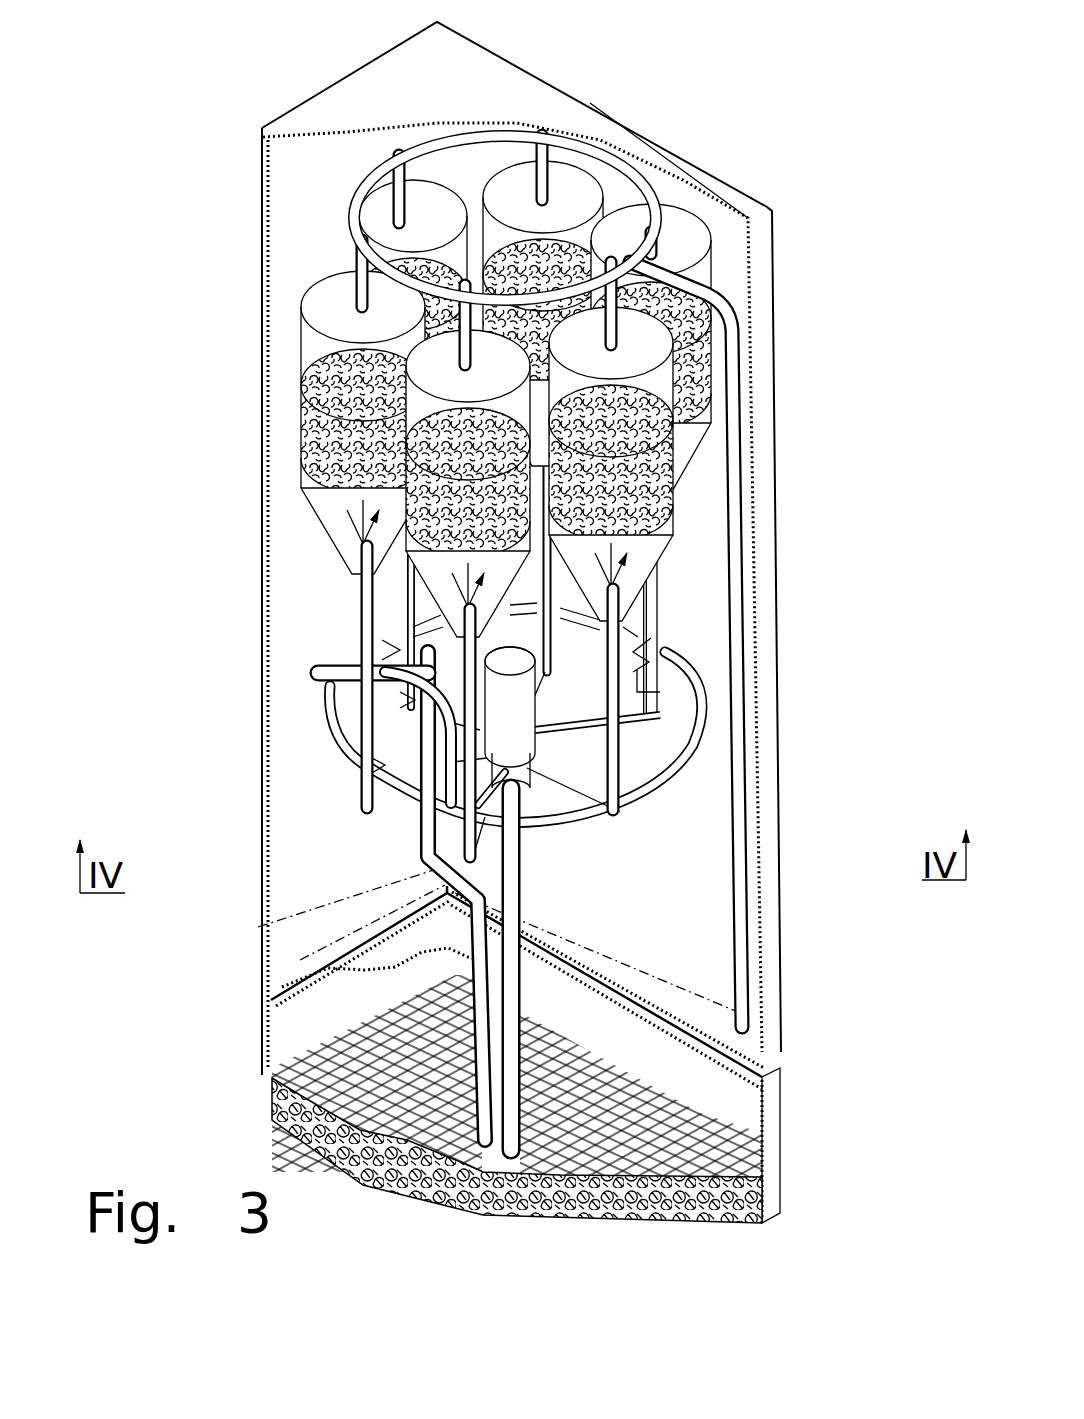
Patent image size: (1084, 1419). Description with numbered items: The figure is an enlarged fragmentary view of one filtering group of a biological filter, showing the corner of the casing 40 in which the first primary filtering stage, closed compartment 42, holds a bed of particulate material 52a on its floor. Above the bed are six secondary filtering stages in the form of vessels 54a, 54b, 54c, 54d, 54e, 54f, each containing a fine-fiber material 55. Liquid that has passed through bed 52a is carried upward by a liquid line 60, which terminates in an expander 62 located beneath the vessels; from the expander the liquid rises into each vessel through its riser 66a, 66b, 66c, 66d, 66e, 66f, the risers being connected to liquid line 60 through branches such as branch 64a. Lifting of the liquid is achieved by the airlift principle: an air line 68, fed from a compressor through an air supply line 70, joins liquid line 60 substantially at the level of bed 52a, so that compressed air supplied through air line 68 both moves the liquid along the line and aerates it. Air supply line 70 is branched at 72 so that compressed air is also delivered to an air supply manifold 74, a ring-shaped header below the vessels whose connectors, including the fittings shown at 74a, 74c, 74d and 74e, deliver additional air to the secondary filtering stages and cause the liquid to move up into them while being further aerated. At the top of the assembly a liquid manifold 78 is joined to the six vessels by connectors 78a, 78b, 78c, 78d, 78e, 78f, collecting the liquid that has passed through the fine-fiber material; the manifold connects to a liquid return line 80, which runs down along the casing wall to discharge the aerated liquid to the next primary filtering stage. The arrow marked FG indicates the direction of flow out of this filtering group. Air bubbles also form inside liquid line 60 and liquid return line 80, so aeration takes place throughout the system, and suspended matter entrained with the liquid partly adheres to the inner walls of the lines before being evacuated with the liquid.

The casing 40 is at (803, 1135).
The closed compartment 42 is at (303, 1022).
The bed of particulate material 52a is at (273, 1097).
The secondary filtering stage vessel 54a is at (680, 265).
The secondary filtering stage vessel 54b is at (568, 195).
The secondary filtering stage vessel 54c is at (422, 208).
The secondary filtering stage vessel 54d is at (332, 310).
The secondary filtering stage vessel 54e is at (438, 377).
The secondary filtering stage vessel 54f is at (640, 348).
The fine-fiber material 55 is at (687, 488).
The liquid line 60 is at (303, 1022).
The expander 62 is at (522, 716).
The branch 64a is at (545, 840).
The riser 66a is at (652, 603).
The riser 66b is at (613, 650).
The riser 66c is at (367, 590).
The riser 66d is at (405, 593).
The riser 66e is at (465, 683).
The riser 66f is at (597, 642).
The air line 68 is at (445, 938).
The air supply line 70 is at (317, 672).
The branch of air supply line 72 is at (447, 740).
The air supply manifold 74 is at (685, 670).
The fitting 74a is at (638, 692).
The fitting 74c is at (390, 637).
The fitting 74d is at (377, 748).
The pipe bend 74e is at (430, 865).
The liquid manifold 78 is at (627, 158).
The connector 78a is at (625, 202).
The connector 78b is at (543, 153).
The connector 78c is at (397, 197).
The connector 78d is at (365, 285).
The connector 78e is at (453, 348).
The connector 78f is at (611, 297).
The liquid return line 80 is at (733, 445).
The flow gas direction FG is at (812, 733).